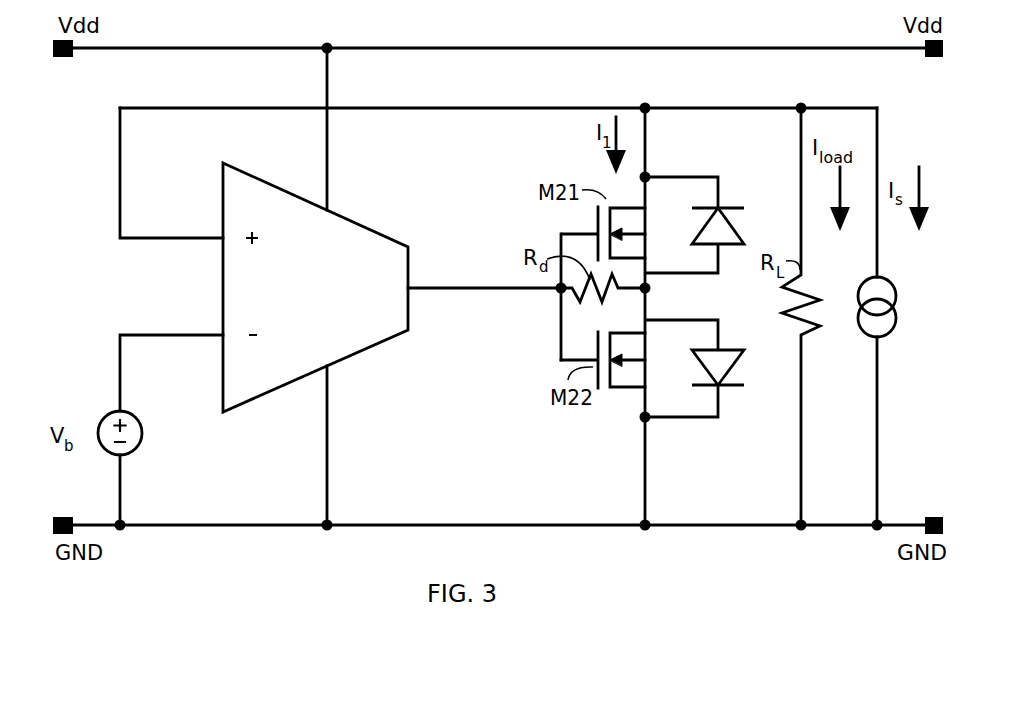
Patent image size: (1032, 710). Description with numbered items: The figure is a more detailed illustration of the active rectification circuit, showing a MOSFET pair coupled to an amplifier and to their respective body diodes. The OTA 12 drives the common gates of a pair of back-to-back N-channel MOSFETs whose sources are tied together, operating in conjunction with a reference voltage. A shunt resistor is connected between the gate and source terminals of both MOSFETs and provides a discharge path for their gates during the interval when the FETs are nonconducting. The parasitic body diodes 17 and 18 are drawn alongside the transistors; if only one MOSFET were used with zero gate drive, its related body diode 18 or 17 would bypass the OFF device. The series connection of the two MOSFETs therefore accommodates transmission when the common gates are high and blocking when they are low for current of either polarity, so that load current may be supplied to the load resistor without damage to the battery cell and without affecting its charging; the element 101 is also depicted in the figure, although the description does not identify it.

The OTA 12 is at (327, 297).
The parasitic body diode 17 is at (722, 203).
The parasitic body diode 18 is at (728, 392).
The current source 101 is at (900, 307).